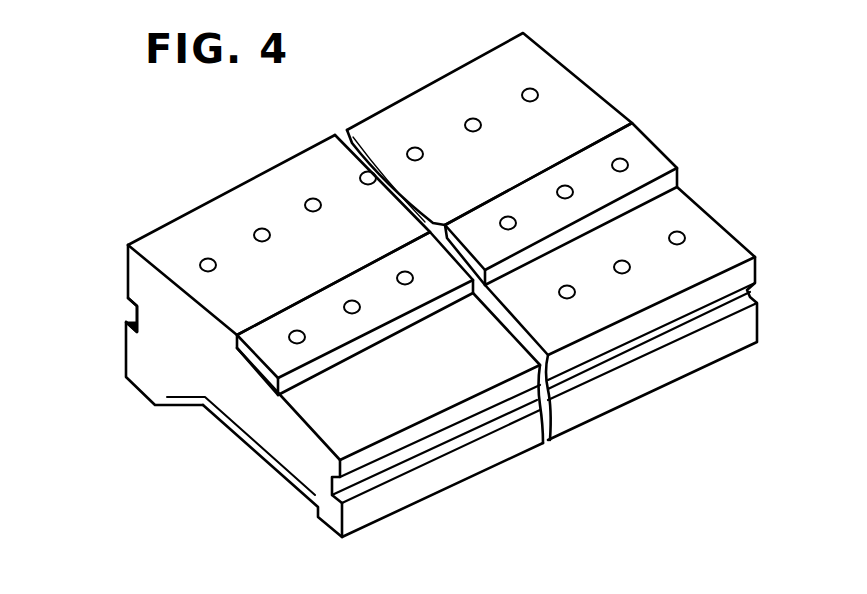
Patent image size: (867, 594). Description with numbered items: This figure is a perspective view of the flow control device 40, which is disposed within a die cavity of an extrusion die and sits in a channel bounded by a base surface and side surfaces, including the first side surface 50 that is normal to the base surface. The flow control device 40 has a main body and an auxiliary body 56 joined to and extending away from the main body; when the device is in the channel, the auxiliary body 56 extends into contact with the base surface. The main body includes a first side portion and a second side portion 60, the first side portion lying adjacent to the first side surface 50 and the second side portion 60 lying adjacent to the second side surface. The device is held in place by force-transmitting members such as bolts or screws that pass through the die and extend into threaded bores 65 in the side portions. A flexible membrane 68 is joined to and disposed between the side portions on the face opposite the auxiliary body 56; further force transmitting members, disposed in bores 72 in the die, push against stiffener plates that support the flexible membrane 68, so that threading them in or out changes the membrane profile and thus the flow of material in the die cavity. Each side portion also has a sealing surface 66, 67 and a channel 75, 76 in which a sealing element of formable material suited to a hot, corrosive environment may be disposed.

The flow control device 40 is at (224, 382).
The first side surface 50 is at (160, 245).
The auxiliary body 56 is at (375, 287).
The second side portion 60 is at (330, 515).
The threaded bores 65 is at (415, 154).
The sealing surface 66 is at (123, 358).
The sealing surface 67 is at (450, 468).
The flexible membrane 68 is at (238, 438).
The bores 72 is at (508, 223).
The channel 75 is at (132, 313).
The channel 76 is at (360, 487).